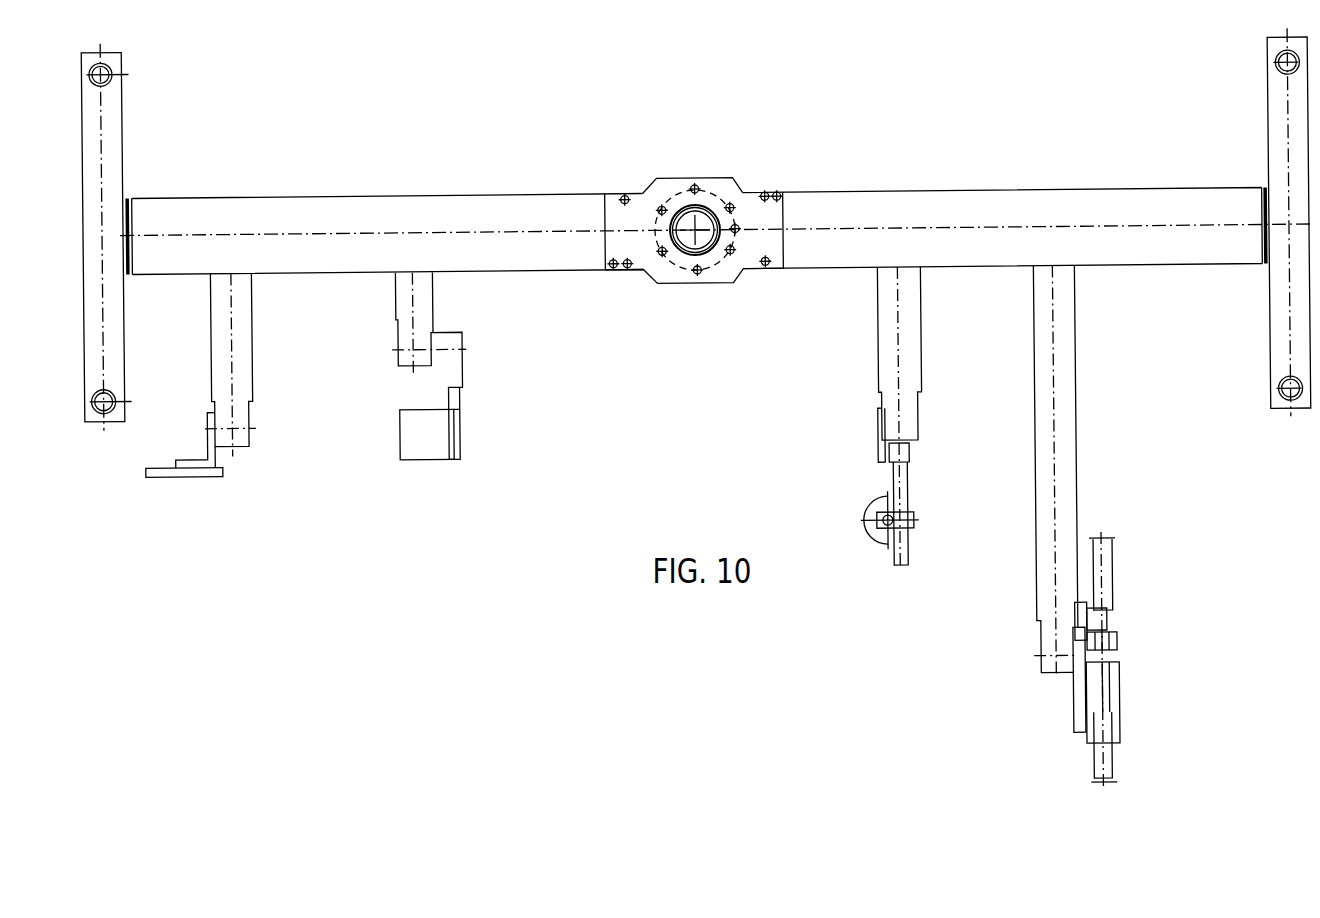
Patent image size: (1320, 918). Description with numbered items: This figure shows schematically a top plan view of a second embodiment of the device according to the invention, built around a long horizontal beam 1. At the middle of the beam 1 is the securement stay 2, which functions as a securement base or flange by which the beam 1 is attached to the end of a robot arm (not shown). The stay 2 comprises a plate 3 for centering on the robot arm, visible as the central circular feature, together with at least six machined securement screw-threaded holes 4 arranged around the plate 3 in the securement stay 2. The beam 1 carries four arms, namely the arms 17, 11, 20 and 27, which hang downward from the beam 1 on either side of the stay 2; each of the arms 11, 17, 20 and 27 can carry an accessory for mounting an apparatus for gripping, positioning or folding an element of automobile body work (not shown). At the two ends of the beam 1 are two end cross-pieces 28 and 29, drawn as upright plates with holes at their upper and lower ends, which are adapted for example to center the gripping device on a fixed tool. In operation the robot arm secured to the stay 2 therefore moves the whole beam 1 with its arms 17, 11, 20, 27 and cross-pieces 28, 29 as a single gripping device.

The beam 1 is at (1006, 208).
The stay 2 is at (680, 178).
The plate 3 is at (700, 220).
The securement screw-threaded holes 4 is at (697, 270).
The arm 11 is at (422, 296).
The arm 17 is at (243, 299).
The arm 20 is at (909, 293).
The arm 27 is at (1065, 323).
The end cross-piece 28 is at (112, 171).
The end cross-piece 29 is at (1277, 155).